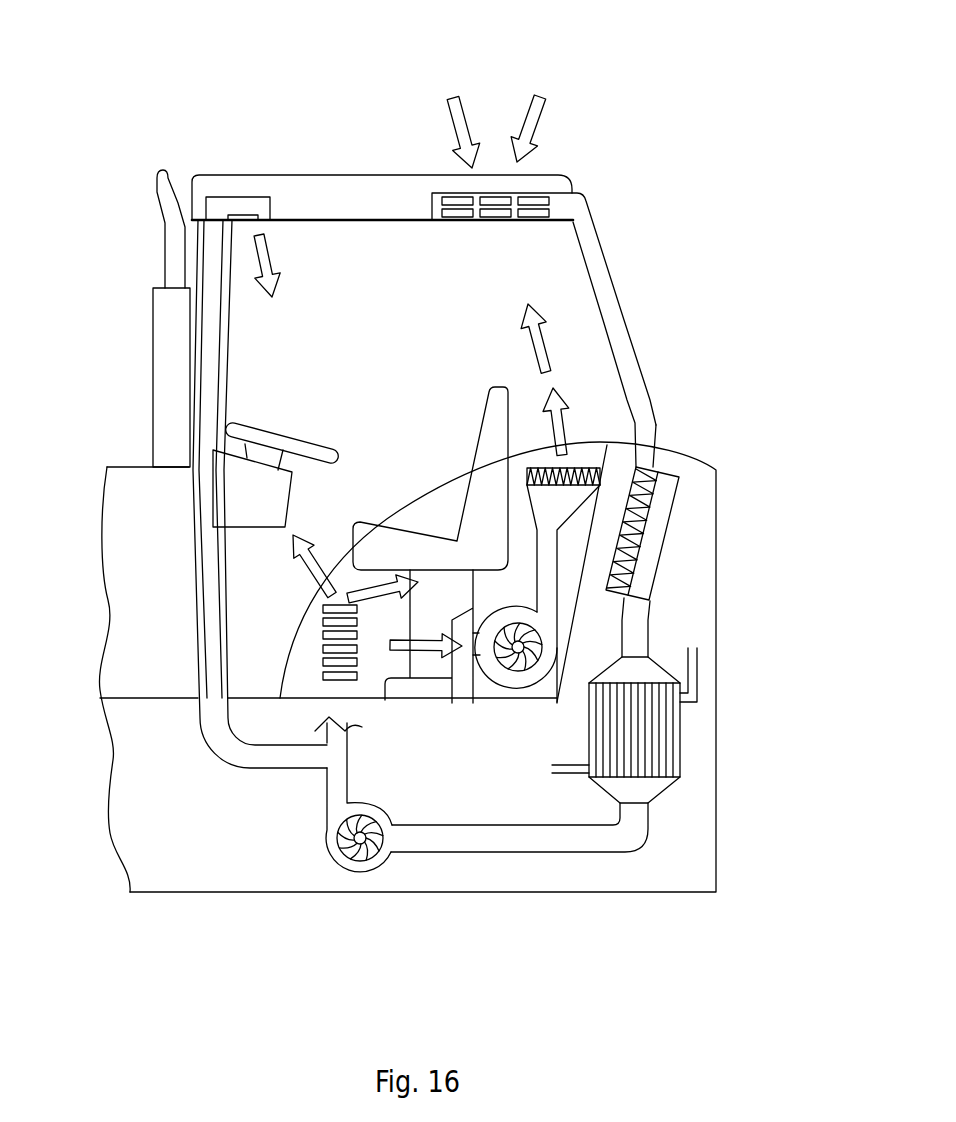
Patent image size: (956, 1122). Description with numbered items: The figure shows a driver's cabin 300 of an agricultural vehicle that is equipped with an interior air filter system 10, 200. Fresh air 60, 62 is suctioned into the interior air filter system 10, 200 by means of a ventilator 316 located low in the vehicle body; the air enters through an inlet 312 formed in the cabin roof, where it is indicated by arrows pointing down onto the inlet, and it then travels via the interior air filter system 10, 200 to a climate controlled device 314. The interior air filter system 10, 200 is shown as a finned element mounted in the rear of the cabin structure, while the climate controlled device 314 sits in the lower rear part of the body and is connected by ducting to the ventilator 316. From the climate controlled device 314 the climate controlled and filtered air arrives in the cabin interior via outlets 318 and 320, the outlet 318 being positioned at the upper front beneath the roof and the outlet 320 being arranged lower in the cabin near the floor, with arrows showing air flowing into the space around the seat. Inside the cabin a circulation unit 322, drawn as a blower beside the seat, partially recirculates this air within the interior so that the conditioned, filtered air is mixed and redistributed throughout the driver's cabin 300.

The driver's cabin 300 is at (160, 118).
The air inlet flow 60 is at (546, 120).
The fresh air 62 is at (528, 128).
The inlet 312 is at (537, 213).
The outlet 318 is at (262, 219).
The outlet 320 is at (323, 628).
The circulation unit 322 is at (542, 562).
The heat exchanger 10 is at (662, 537).
The interior air filter system 200 is at (631, 528).
The climate controlled device 314 is at (667, 735).
The ventilator 316 is at (357, 842).